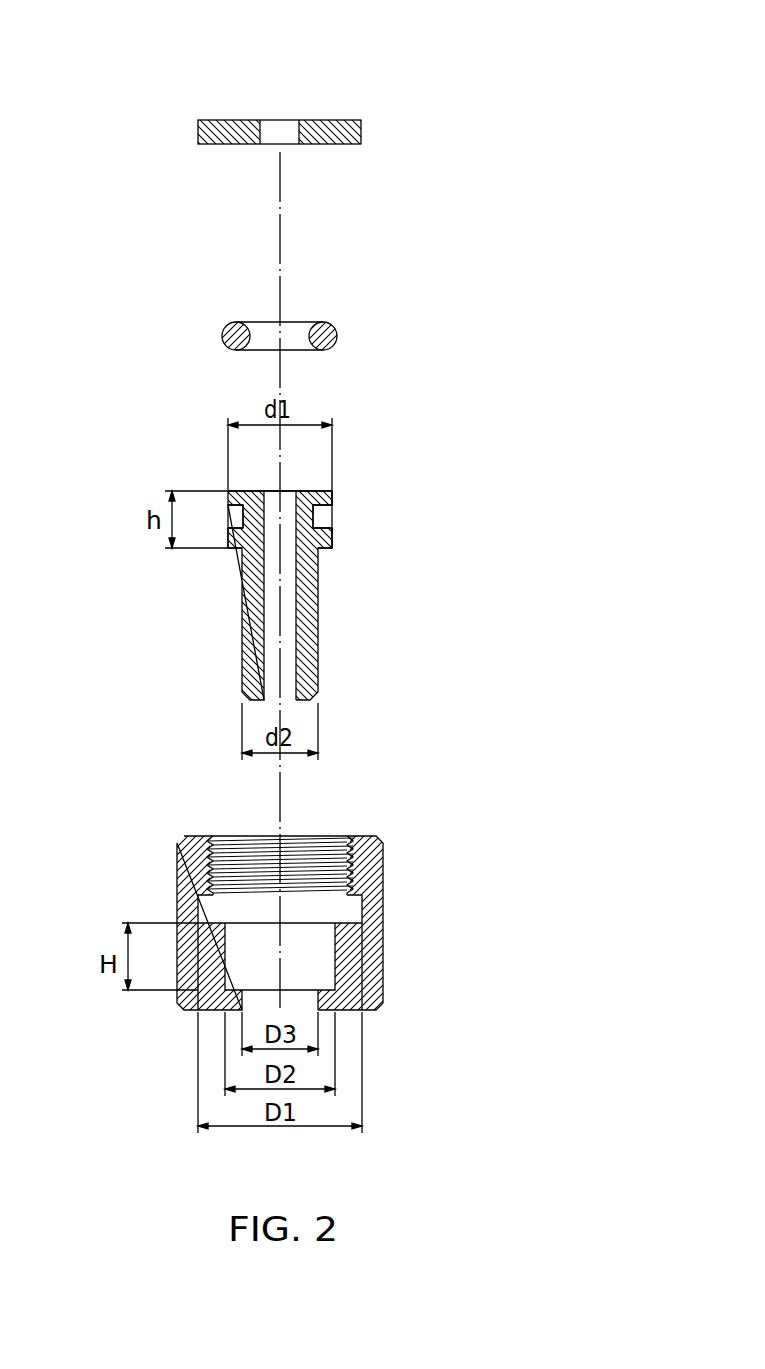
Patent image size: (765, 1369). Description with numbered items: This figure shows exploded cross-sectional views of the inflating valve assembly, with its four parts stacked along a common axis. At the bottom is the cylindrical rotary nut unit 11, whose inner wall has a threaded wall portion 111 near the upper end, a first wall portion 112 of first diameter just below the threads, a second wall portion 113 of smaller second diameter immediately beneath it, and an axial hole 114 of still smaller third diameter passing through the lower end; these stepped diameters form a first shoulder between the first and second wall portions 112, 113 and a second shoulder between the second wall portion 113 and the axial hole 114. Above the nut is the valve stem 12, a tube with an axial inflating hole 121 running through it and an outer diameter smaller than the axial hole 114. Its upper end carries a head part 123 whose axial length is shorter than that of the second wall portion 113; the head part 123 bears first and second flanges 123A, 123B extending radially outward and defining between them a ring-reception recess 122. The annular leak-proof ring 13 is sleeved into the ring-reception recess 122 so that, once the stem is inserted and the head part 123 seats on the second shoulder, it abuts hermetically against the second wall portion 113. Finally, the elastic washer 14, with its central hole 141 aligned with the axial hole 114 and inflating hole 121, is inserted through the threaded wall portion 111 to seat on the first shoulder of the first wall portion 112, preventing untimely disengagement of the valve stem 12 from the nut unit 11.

The rotary nut unit 11 is at (412, 925).
The threaded wall portion 111 is at (281, 857).
The first wall portion 112 is at (352, 908).
The second wall portion 113 is at (313, 957).
The axial hole 114 is at (300, 998).
The valve stem 12 is at (342, 620).
The axial inflating hole 121 is at (283, 497).
The ring-reception recess 122 is at (322, 515).
The head part 123 is at (340, 491).
The first flange 123A is at (232, 538).
The second flange 123B is at (232, 500).
The annular leak-proof ring 13 is at (336, 330).
The elastic washer 14 is at (360, 125).
The central hole 141 is at (278, 128).